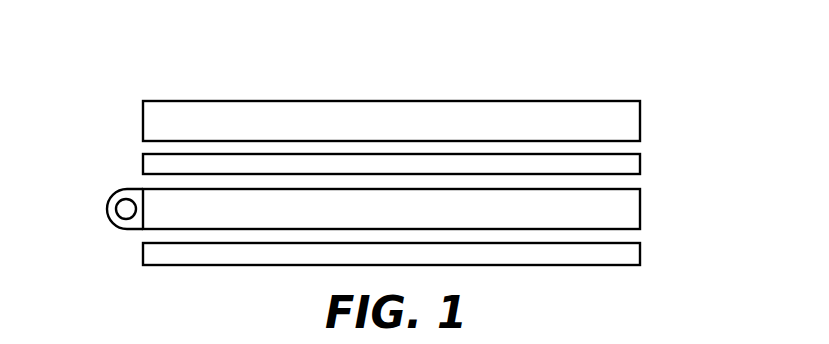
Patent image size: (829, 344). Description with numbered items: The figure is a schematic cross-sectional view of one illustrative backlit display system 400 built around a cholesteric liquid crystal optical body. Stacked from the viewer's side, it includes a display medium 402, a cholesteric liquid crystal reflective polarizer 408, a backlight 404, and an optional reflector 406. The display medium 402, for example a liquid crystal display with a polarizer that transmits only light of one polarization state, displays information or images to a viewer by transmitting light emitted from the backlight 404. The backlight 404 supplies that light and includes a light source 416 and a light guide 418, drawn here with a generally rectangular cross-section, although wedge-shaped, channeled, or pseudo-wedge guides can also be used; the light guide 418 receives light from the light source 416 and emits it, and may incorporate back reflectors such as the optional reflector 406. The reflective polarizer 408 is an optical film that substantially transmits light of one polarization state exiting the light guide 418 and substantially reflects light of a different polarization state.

The backlit display system 400 is at (254, 49).
The display medium 402 is at (626, 122).
The backlight 404 is at (626, 207).
The optional reflector 406 is at (156, 254).
The cholesteric liquid crystal reflective polarizer 408 is at (626, 164).
The light source 416 is at (116, 208).
The light guide 418 is at (156, 189).